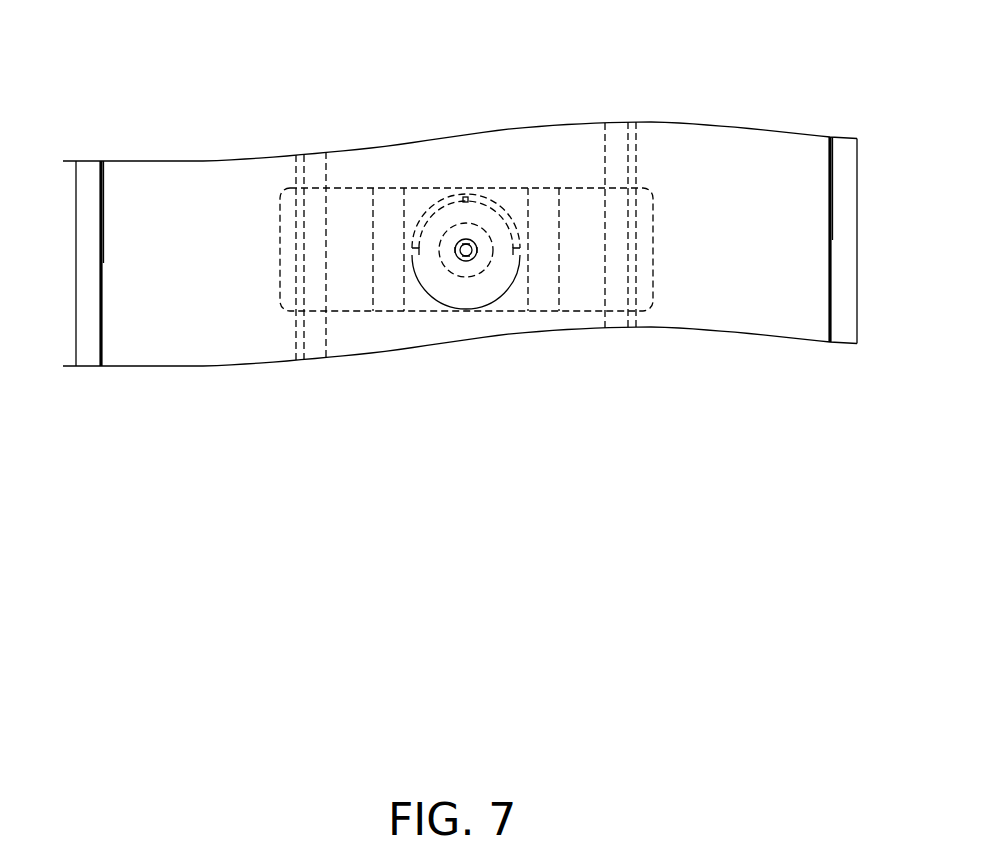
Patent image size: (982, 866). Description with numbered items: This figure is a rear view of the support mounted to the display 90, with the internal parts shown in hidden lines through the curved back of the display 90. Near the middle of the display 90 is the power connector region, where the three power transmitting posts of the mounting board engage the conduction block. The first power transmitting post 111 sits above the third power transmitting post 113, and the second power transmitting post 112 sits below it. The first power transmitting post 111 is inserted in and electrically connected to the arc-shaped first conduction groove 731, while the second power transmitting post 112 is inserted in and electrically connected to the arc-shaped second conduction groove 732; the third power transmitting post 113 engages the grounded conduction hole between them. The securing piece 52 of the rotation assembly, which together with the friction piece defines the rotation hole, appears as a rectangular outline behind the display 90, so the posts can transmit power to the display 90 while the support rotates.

The display 90 is at (155, 183).
The securing piece 52 is at (588, 220).
The first conduction groove 731 is at (465, 243).
The second conduction groove 732 is at (473, 257).
The first power transmitting post 111 is at (466, 245).
The second power transmitting post 112 is at (465, 258).
The third power transmitting post 113 is at (462, 257).